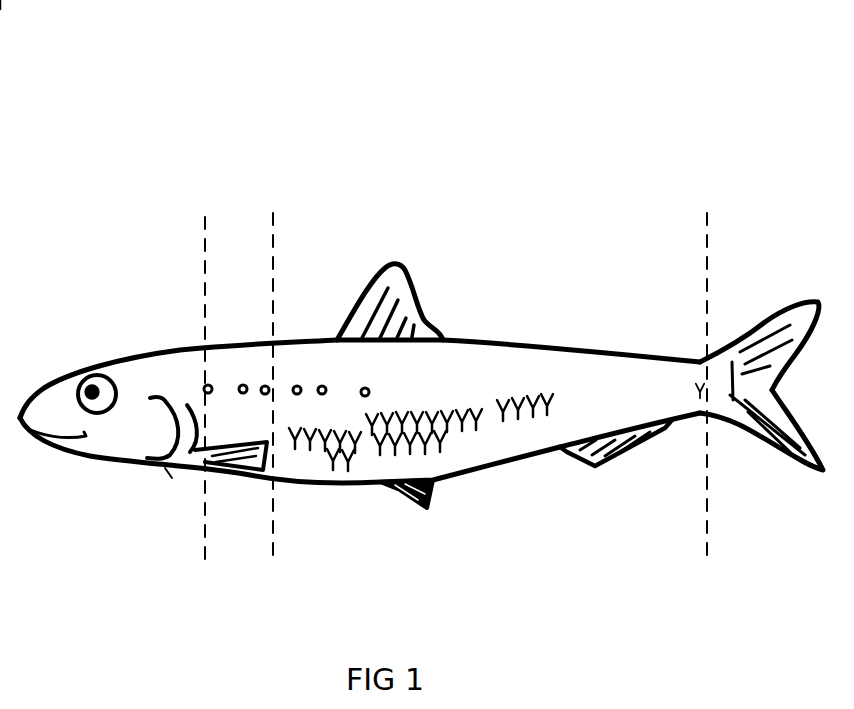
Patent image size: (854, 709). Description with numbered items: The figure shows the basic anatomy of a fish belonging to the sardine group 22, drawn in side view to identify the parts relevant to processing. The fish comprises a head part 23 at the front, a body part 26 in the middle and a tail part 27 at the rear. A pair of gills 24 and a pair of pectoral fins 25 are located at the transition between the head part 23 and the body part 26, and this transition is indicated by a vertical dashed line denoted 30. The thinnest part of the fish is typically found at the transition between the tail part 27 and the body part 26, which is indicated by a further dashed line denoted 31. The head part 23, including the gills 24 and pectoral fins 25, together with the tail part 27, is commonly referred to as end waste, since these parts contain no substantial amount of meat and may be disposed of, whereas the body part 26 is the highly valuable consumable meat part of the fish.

The fish belonging to the sardine group 22 is at (453, 240).
The head part 23 is at (148, 373).
The gills 24 is at (175, 465).
The pectoral fins 25 is at (240, 460).
The body part 26 is at (503, 370).
The tail part 27 is at (800, 320).
The dashed line 30 is at (205, 217).
The further dashed line 31 is at (705, 213).